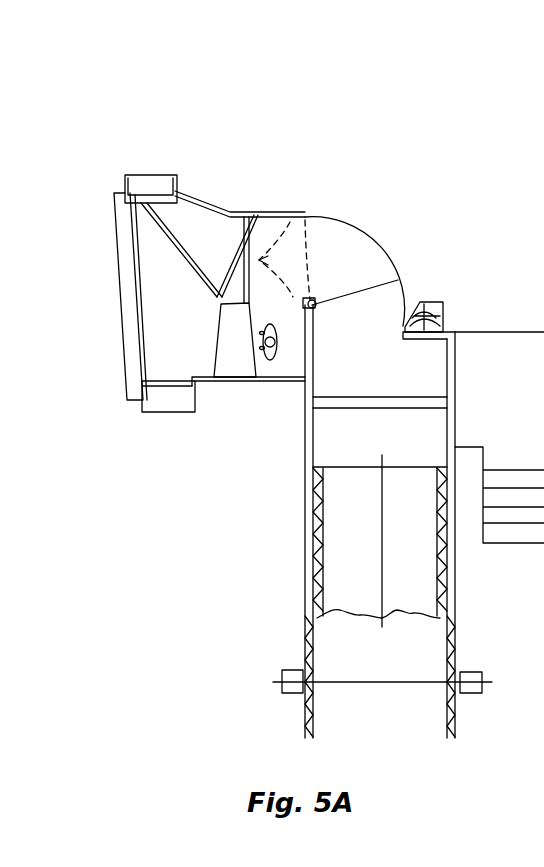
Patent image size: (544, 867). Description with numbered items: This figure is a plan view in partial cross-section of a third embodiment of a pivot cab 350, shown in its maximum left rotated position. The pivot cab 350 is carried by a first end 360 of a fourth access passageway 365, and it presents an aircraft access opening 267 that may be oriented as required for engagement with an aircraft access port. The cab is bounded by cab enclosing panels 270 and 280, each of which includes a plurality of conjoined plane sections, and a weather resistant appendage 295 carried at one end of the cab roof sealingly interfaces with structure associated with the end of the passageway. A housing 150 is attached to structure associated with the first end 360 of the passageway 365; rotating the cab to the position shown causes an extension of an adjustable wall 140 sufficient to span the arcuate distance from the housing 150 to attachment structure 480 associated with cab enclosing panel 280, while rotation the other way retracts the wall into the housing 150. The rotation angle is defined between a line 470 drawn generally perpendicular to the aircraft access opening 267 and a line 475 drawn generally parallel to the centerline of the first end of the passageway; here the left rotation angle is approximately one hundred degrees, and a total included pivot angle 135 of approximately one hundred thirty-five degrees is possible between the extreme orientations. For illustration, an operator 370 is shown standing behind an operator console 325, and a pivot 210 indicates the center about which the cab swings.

The total included pivot angle 135 is at (152, 183).
The pivot cab 350 is at (320, 158).
The cab enclosing panel 280 is at (273, 215).
The attachment structure 480 is at (308, 215).
The adjustable wall 140 is at (385, 250).
The housing 150 is at (443, 307).
The weather resistant appendage 295 is at (378, 280).
The pivot 210 is at (314, 307).
The line perpendicular to aircraft access opening 470 is at (127, 292).
The aircraft access opening 267 is at (113, 370).
The operator console 325 is at (233, 343).
The cab enclosing panel 270 is at (260, 377).
The operator 370 is at (273, 358).
The first end of passageway 360 is at (283, 463).
The fourth access passageway 365 is at (332, 643).
The line parallel to passageway centerline 475 is at (380, 570).